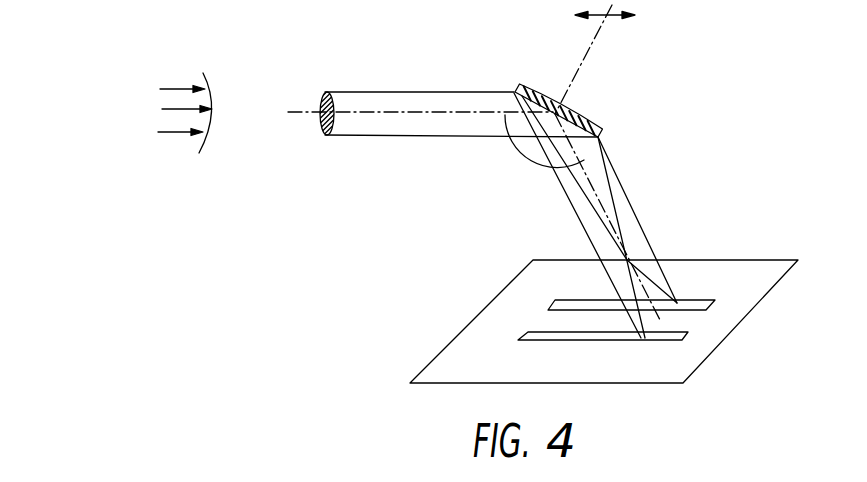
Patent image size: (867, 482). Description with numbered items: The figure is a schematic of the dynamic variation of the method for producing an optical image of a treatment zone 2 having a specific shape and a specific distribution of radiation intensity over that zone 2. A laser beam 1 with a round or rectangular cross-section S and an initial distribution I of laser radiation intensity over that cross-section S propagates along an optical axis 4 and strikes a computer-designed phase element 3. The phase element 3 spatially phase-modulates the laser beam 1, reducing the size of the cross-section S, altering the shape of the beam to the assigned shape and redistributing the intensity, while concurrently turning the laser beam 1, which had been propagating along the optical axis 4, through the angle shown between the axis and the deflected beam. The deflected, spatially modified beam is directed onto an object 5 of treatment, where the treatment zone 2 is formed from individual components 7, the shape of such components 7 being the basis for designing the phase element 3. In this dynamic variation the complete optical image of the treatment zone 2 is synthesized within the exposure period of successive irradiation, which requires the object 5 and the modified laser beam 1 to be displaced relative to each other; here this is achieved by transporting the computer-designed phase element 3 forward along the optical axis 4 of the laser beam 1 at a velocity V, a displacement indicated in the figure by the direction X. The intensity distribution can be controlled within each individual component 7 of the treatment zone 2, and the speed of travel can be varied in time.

The laser beam 1 is at (413, 85).
The treatment zone 2 is at (533, 332).
The computer-designed phase element 3 is at (545, 94).
The optical axis 4 is at (293, 112).
The object 5 is at (704, 352).
The individual component 7 is at (647, 335).
The beam cross-section S is at (323, 93).
The initial distribution of laser radiation intensity I is at (185, 91).
The displacement direction X is at (595, 59).